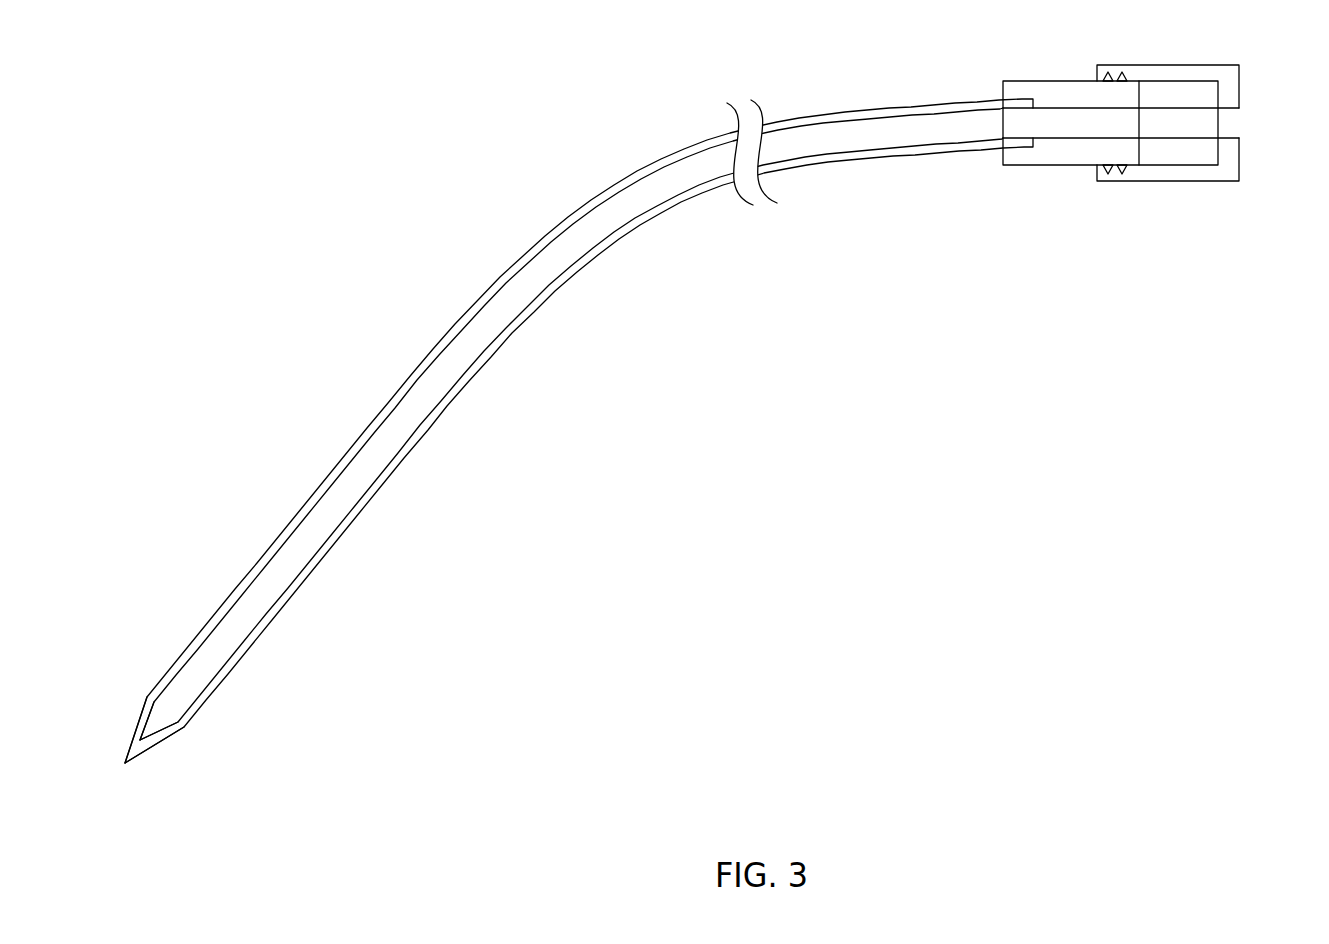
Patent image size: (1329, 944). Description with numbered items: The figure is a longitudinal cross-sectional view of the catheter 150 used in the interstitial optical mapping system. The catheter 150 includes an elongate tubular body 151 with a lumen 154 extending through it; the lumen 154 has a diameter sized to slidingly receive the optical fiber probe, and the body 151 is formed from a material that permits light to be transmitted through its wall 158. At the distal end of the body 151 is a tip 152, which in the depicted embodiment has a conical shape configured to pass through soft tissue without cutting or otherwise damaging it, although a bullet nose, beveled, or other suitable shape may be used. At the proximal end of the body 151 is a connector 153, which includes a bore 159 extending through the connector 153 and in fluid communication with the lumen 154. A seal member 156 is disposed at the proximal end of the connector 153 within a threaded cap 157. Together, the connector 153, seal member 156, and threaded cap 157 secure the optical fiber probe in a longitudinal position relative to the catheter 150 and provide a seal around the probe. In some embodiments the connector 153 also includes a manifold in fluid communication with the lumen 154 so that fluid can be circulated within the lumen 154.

The catheter 150 is at (718, 407).
The tubular body 151 is at (473, 375).
The tip 152 is at (162, 742).
The connector 153 is at (1053, 165).
The lumen 154 is at (565, 242).
The seal member 156 is at (1180, 152).
The threaded cap 157 is at (1227, 155).
The wall 158 is at (368, 497).
The bore 159 is at (1078, 122).